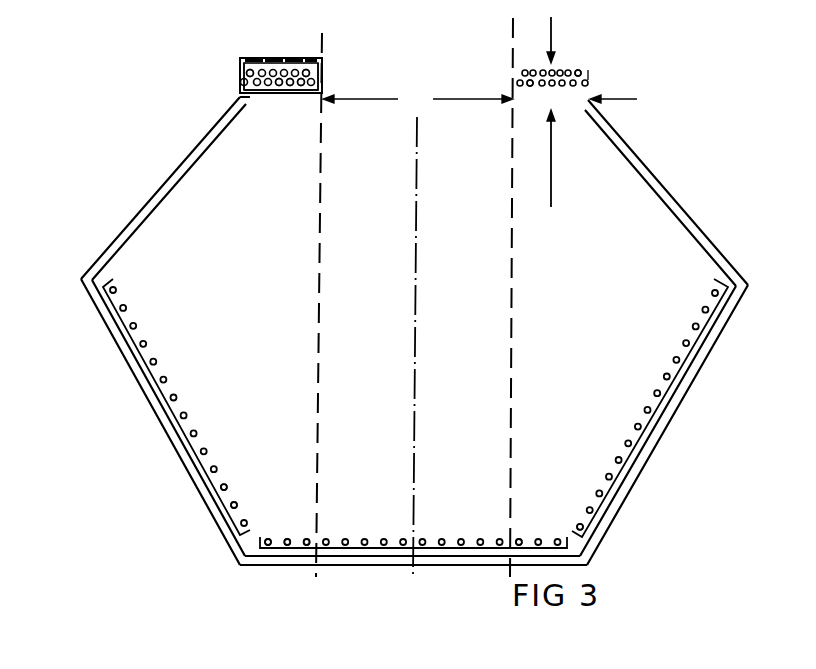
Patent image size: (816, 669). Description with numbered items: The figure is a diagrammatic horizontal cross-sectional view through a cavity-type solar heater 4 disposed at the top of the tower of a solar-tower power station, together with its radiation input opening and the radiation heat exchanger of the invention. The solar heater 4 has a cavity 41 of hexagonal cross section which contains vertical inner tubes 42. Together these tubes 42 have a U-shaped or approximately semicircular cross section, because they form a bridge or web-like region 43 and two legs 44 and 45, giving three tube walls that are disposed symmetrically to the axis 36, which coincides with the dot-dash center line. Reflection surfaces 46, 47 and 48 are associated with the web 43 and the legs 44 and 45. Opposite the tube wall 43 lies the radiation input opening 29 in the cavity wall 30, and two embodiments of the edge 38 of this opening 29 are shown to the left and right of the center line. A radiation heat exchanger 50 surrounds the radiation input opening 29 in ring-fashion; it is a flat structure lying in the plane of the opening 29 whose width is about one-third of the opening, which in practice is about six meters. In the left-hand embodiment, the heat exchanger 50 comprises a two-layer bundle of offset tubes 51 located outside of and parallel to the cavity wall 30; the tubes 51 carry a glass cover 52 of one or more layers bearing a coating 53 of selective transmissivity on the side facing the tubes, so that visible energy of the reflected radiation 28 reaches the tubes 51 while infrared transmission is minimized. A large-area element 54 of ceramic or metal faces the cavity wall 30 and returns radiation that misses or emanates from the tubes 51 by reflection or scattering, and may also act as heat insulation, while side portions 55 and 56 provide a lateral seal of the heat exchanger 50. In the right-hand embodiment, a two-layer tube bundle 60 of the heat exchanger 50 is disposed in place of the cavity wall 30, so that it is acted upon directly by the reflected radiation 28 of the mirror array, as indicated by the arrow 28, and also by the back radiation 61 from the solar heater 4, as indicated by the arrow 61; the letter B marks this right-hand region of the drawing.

The cavity-type solar heater 4 is at (583, 514).
The reflected radiation 28 is at (553, 42).
The radiation input opening 29 is at (418, 101).
The cavity wall 30 is at (305, 103).
The axis 36 is at (417, 322).
The edge of the opening 38 is at (325, 93).
The cavity 41 is at (565, 308).
The inner tubes 42 is at (305, 539).
The web-like region 43 is at (372, 546).
The leg 44 is at (190, 428).
The leg 45 is at (657, 394).
The reflection surface 46 is at (622, 468).
The reflection surface 47 is at (458, 548).
The reflection surface 48 is at (203, 465).
The radiation heat exchanger 50 is at (301, 63).
The tubes 51 is at (290, 85).
The glass cover 52 is at (278, 62).
The coating 53 is at (252, 62).
The large-area element 54 is at (257, 93).
The side portion 55 is at (240, 68).
The side portion 56 is at (322, 66).
The tube bundle 60 is at (579, 68).
The back radiation 61 is at (551, 172).
The region B is at (565, 105).